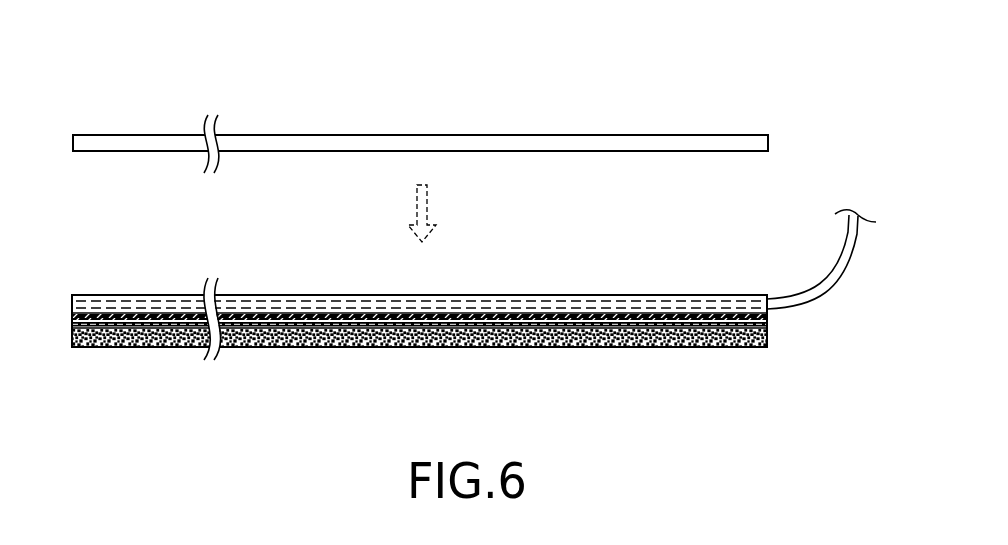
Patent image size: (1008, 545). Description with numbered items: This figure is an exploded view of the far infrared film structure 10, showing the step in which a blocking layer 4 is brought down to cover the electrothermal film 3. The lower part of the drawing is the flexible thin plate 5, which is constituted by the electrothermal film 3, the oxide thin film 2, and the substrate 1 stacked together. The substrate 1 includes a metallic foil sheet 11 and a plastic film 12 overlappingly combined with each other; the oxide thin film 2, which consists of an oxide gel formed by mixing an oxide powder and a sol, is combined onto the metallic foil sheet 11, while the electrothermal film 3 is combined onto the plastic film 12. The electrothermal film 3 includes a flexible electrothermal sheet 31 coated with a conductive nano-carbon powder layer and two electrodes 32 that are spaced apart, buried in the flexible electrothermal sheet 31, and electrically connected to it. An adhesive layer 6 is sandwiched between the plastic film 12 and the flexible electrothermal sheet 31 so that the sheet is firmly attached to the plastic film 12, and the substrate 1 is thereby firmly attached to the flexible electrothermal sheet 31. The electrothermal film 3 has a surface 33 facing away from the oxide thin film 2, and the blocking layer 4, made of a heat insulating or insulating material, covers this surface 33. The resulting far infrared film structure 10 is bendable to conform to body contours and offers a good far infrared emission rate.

The far infrared film structure 10 is at (260, 42).
The blocking layer 4 is at (290, 142).
The flexible thin plate 5 is at (103, 278).
The electrothermal film 3 is at (419, 236).
The surface 33 is at (277, 293).
The electrodes 32 is at (463, 303).
The flexible electrothermal sheet 31 is at (478, 210).
The adhesive layer 6 is at (653, 317).
The substrate 1 is at (462, 379).
The plastic film 12 is at (768, 322).
The metallic foil sheet 11 is at (420, 370).
The oxide thin film 2 is at (377, 343).